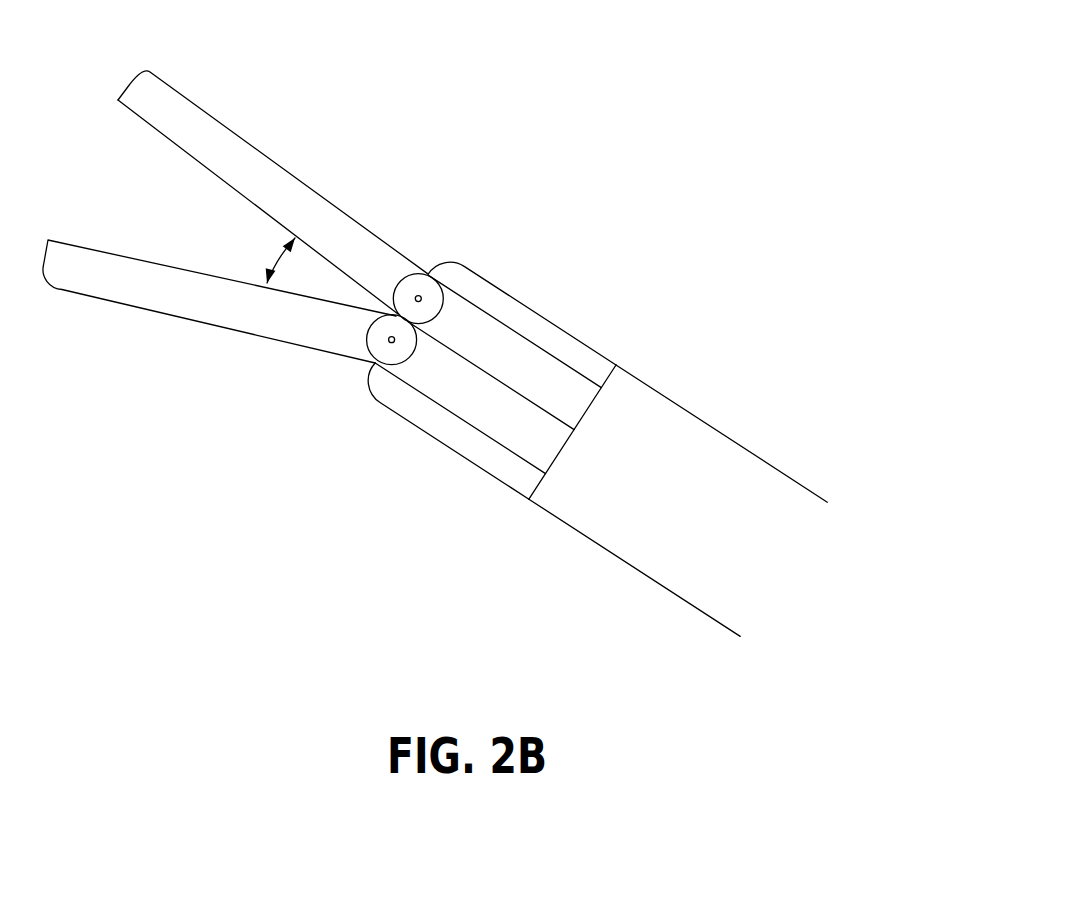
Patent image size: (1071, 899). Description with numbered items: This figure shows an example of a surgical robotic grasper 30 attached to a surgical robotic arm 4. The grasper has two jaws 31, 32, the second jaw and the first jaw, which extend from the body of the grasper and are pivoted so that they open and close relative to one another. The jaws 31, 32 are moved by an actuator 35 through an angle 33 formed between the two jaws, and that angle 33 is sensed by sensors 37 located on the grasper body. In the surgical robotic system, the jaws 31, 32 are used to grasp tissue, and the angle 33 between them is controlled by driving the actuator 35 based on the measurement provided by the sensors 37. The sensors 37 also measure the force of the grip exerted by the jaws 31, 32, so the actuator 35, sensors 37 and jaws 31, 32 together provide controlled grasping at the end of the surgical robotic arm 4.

The surgical robotic grasper 30 is at (357, 465).
The jaw 2 31 is at (167, 300).
The jaw 1 32 is at (205, 118).
The angle 33 is at (279, 259).
The actuator 35 is at (470, 290).
The sensors 37 is at (502, 318).
The surgical robotic arm 4 is at (628, 535).